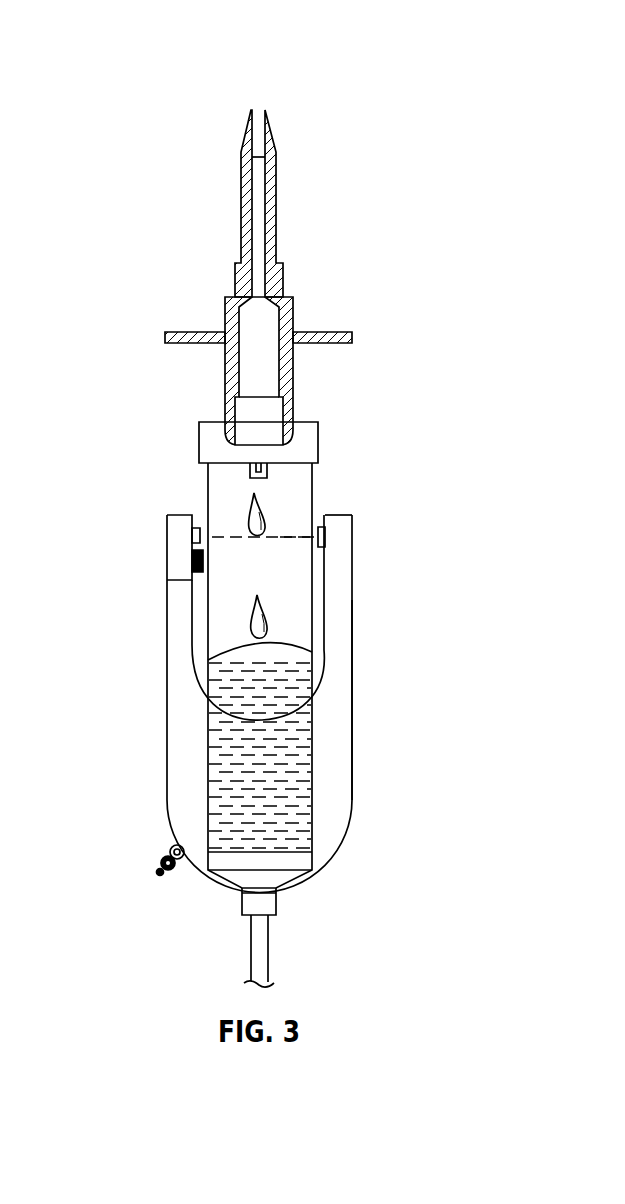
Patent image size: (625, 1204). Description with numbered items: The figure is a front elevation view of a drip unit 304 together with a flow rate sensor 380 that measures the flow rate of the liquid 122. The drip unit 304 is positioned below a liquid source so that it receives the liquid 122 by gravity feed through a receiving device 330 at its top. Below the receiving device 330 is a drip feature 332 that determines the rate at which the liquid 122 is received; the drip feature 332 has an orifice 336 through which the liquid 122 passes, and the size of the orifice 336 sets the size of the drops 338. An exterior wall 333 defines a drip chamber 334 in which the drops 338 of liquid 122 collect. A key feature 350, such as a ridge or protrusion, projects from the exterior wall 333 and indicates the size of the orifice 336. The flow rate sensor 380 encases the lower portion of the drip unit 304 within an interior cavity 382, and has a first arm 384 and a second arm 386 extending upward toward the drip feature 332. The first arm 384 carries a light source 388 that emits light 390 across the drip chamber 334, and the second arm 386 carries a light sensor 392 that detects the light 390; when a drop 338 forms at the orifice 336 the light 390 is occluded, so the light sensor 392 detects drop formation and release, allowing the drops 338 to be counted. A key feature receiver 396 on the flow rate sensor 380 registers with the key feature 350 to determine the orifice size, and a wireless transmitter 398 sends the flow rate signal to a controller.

The drip unit 304 is at (126, 62).
The receiving device 330 is at (248, 222).
The drip feature 332 is at (199, 433).
The orifice 336 is at (250, 468).
The exterior wall 333 is at (313, 500).
The drip chamber 334 is at (279, 588).
The drops 338 is at (262, 505).
The liquid 122 is at (207, 677).
The interior cavity 382 is at (290, 716).
The first arm 384 is at (170, 605).
The second arm 386 is at (340, 632).
The light source 388 is at (192, 540).
The light sensor 392 is at (325, 533).
The key feature 350 is at (195, 540).
The key feature receiver 396 is at (192, 577).
The light 390 is at (285, 538).
The flow rate sensor 380 is at (388, 732).
The wireless transmitter 398 is at (168, 847).